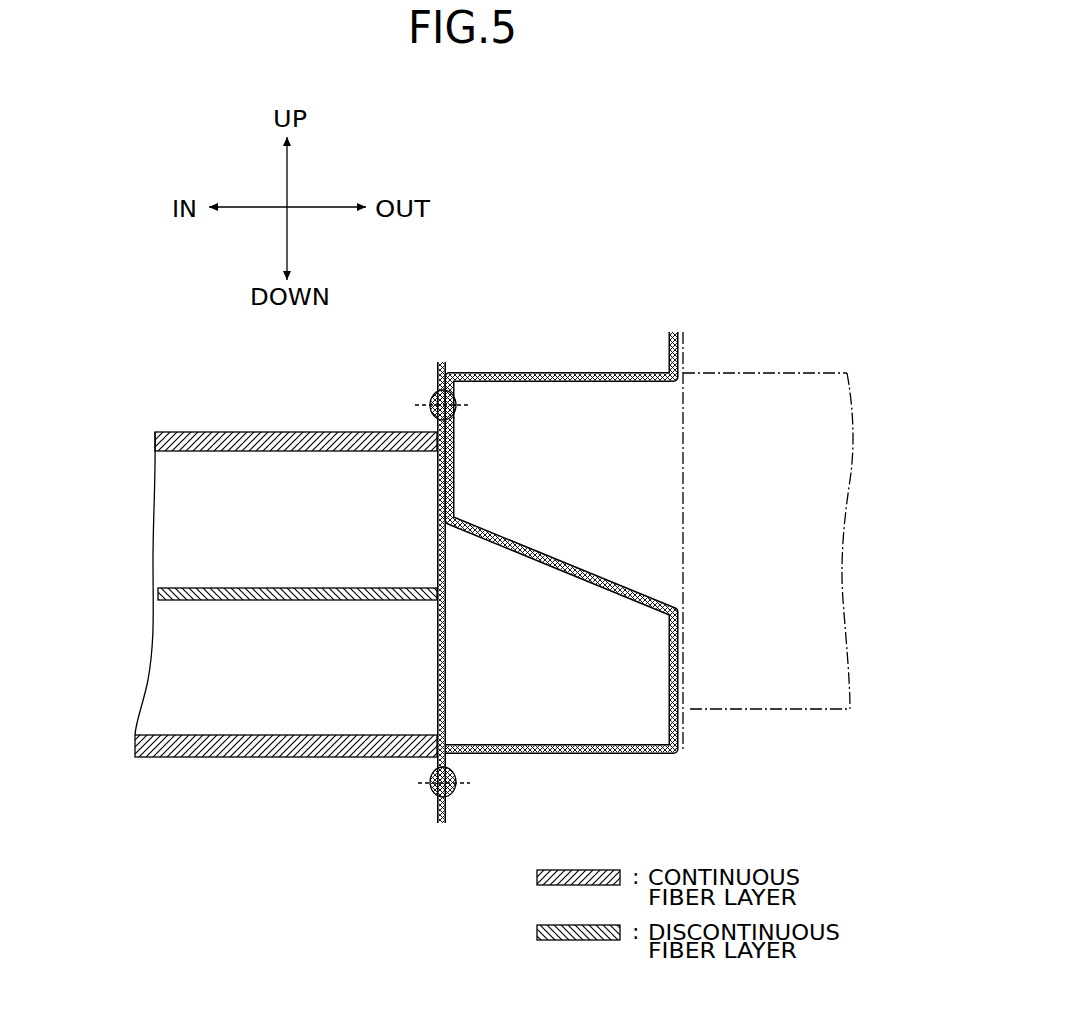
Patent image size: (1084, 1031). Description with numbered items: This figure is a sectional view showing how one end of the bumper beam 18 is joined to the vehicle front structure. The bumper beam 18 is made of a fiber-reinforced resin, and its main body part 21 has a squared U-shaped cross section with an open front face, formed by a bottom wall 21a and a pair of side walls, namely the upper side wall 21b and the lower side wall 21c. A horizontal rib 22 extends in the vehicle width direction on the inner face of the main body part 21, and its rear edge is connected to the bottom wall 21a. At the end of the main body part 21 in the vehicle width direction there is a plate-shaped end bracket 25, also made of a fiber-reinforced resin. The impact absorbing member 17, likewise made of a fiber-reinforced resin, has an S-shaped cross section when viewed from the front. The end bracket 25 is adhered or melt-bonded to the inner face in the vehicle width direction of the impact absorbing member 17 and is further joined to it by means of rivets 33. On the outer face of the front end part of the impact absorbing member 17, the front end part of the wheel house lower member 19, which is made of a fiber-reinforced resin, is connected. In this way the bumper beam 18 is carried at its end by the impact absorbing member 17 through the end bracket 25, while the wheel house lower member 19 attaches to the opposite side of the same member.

The impact absorbing member 17 is at (565, 372).
The bumper beam 18 is at (316, 582).
The wheel house lower member 19 is at (768, 372).
The main body part 21 is at (286, 588).
The bottom wall 21a is at (312, 528).
The upper side wall 21b is at (364, 431).
The lower side wall 21c is at (290, 758).
The horizontal rib 22 is at (280, 600).
The end bracket 25 is at (447, 648).
The rivet 33 is at (455, 410).